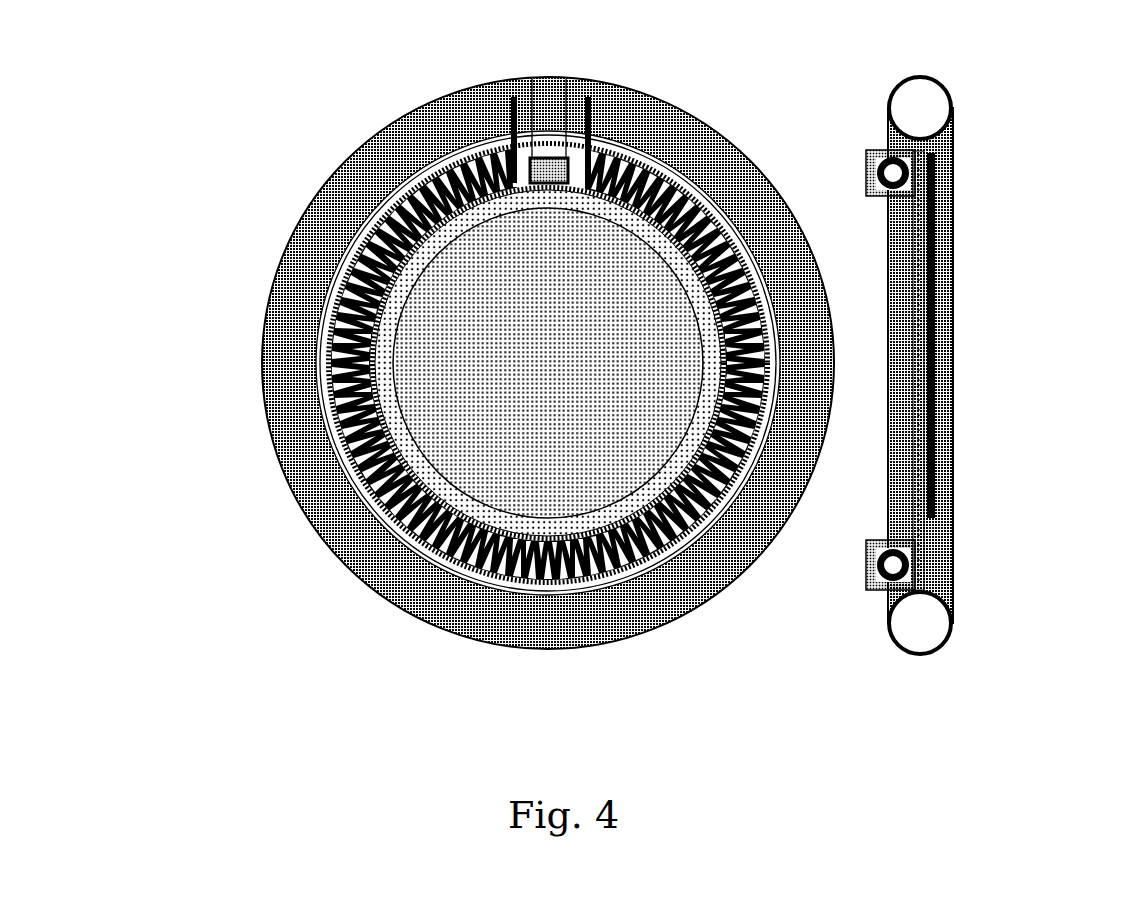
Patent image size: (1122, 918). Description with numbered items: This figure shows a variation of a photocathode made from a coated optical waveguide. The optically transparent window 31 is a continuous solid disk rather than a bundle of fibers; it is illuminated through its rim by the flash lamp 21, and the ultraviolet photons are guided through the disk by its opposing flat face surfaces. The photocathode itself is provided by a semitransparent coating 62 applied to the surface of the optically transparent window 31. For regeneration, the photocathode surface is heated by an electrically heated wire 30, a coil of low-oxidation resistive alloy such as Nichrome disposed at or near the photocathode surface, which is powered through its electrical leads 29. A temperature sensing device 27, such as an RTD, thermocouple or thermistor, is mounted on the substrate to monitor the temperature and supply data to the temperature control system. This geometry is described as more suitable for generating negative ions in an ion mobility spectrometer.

The flash lamp 21 is at (945, 612).
The temperature sensing device 27 is at (532, 138).
The electrical leads 29 is at (583, 92).
The electrically heated wire 30 is at (358, 502).
The optically transparent window 31 is at (437, 230).
The semitransparent coating 62 is at (437, 403).